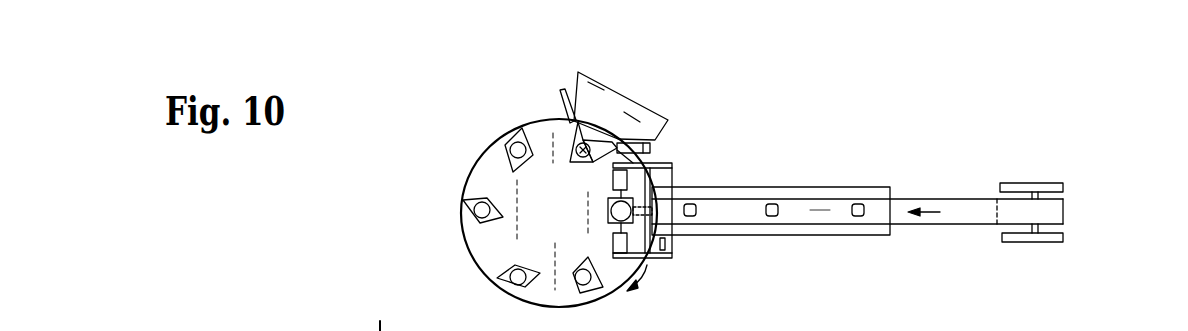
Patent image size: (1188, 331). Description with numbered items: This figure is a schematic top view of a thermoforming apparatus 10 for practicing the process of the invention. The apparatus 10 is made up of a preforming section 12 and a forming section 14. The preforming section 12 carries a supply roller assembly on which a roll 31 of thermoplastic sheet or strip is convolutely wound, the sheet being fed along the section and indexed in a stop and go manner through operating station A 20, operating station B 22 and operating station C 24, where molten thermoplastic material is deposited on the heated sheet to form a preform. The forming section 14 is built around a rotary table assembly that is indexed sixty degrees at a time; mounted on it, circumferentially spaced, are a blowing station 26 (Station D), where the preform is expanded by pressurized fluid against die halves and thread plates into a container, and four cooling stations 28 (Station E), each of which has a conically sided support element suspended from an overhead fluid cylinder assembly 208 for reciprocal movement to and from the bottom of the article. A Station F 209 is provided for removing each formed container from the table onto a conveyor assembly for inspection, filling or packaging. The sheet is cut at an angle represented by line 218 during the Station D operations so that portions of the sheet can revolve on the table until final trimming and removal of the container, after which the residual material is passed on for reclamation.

The thermoforming apparatus 10 is at (751, 243).
The preforming section 12 is at (760, 180).
The forming section 14 is at (452, 186).
The operating station A 20 is at (858, 204).
The operating station B 22 is at (780, 210).
The operating station C 24 is at (690, 205).
The blowing station 26 is at (606, 210).
The cooling station 28 is at (507, 143).
The roll 31 is at (1055, 212).
The overhead fluid cylinder assembly 208 is at (592, 283).
The Station F 209 is at (610, 102).
The line 218 is at (666, 176).